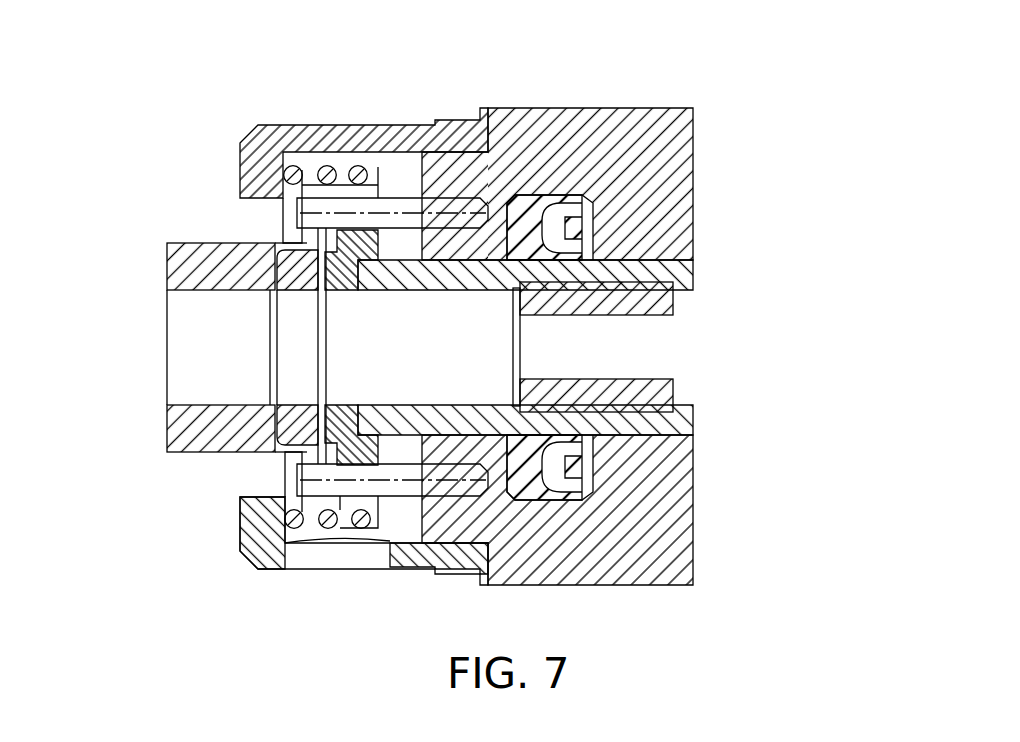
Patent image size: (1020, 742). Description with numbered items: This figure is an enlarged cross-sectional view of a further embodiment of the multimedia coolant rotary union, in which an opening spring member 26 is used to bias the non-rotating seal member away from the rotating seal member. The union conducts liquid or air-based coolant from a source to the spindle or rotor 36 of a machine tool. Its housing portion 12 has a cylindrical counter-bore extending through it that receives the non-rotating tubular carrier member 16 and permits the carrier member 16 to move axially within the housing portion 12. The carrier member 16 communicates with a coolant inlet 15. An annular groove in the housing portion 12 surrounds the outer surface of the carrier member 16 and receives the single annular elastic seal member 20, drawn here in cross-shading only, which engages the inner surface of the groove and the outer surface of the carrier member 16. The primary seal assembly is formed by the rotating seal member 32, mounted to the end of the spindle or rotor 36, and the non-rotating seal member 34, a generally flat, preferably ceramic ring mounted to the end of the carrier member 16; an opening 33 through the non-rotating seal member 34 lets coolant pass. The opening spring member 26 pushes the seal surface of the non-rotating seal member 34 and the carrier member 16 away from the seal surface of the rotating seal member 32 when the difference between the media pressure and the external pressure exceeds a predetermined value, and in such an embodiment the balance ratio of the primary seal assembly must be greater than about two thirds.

The housing portion 12 is at (593, 140).
The coolant inlet 15 is at (683, 320).
The tubular carrier member 16 is at (652, 272).
The elastic seal member 20 is at (580, 238).
The opening spring member 26 is at (323, 168).
The rotating seal member 32 is at (297, 272).
The opening 33 is at (342, 333).
The non-rotating seal member 34 is at (340, 420).
The spindle or rotor 36 is at (202, 267).